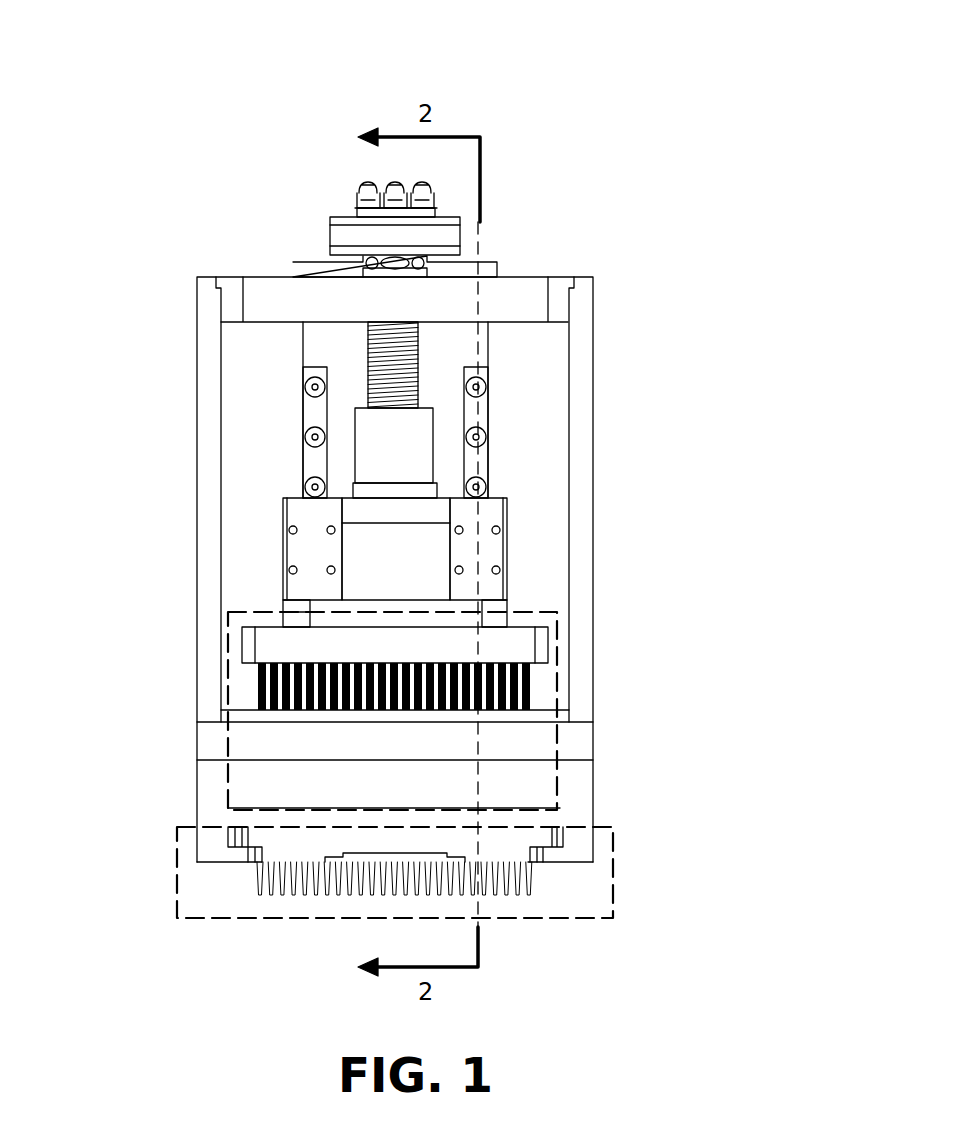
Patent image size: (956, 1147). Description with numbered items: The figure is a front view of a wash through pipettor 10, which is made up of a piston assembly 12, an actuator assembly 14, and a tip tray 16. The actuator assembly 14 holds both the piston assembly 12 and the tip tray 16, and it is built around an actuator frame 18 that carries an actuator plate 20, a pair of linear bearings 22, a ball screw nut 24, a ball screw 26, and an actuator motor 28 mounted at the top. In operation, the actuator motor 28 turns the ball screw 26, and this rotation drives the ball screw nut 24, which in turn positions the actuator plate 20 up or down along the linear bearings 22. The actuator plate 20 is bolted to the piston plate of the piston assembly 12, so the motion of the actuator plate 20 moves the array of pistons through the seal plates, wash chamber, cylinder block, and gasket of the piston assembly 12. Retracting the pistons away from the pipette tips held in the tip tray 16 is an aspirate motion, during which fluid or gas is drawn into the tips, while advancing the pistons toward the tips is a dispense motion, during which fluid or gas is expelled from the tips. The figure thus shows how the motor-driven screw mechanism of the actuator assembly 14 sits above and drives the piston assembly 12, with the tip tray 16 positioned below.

The wash through pipettor 10 is at (215, 110).
The piston assembly 12 is at (222, 772).
The actuator assembly 14 is at (150, 180).
The tip tray 16 is at (173, 893).
The actuator frame 18 is at (580, 633).
The actuator plate 20 is at (470, 605).
The linear bearings 22 is at (480, 470).
The ball screw nut 24 is at (398, 428).
The ball screw 26 is at (410, 358).
The actuator motor 28 is at (445, 237).